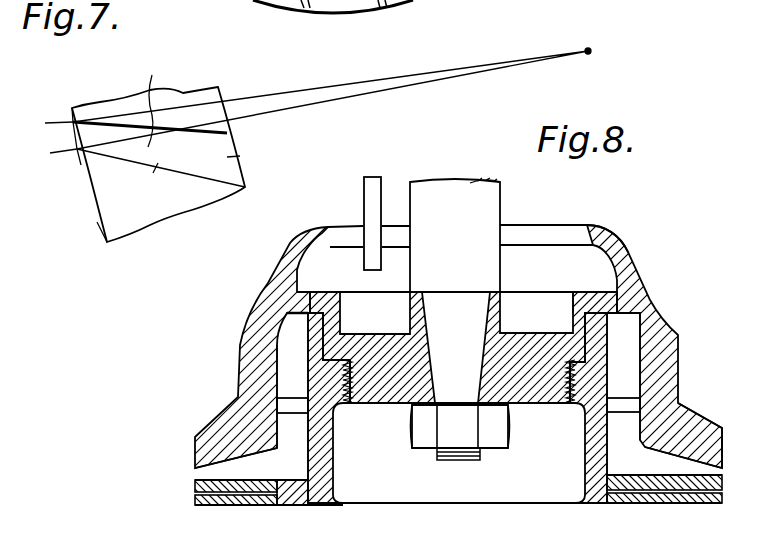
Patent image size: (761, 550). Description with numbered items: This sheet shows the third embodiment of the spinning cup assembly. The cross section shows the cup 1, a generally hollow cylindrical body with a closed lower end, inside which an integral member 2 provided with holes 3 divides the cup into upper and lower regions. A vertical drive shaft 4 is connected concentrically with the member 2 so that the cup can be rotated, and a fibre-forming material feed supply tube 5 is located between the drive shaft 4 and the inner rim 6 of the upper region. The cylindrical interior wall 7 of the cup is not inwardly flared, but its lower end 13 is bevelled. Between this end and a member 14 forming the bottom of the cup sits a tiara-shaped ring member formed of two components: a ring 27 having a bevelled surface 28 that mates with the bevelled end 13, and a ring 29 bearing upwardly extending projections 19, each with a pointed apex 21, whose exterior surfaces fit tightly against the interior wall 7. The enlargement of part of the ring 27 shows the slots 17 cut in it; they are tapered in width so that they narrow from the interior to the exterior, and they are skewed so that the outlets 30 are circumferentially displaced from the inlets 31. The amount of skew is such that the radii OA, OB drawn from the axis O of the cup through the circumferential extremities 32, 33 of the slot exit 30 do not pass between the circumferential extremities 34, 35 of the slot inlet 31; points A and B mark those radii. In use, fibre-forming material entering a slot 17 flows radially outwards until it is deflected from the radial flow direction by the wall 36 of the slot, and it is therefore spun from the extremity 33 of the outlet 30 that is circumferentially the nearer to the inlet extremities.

In FIG. 8, the cup 1 is at (265, 285).
In FIG. 8, the member 2 is at (323, 292).
In FIG. 8, the holes 3 is at (602, 292).
In FIG. 8, the vertical drive shaft 4 is at (500, 215).
In FIG. 8, the fibre-forming material feed supply tube 5 is at (363, 204).
In FIG. 8, the inner rim 6 is at (581, 236).
In FIG. 8, the interior wall 7 is at (281, 345).
In FIG. 8, the bevelled lower end 13 is at (703, 428).
In FIG. 8, the member forming the bottom of the cup 14 is at (323, 498).
In FIG. 7, the slots 17 is at (152, 101).
In FIG. 8, the slots 17 is at (241, 478).
In FIG. 8, the projections 19 is at (302, 461).
In FIG. 8, the pointed apex 21 is at (296, 398).
In FIG. 7, the ring 27 is at (97, 222).
In FIG. 8, the ring 27 is at (197, 498).
In FIG. 7, the bevelled surface 28 is at (107, 183).
In FIG. 8, the ring 29 is at (280, 495).
In FIG. 7, the outlets 30 is at (78, 138).
In FIG. 8, the outlets 30 is at (197, 470).
In FIG. 7, the inlets 31 is at (240, 156).
In FIG. 7, the circumferential extremity 32 is at (72, 118).
In FIG. 7, the circumferential extremity 33 is at (77, 152).
In FIG. 7, the circumferential extremity 34 is at (232, 133).
In FIG. 7, the circumferential extremity 35 is at (245, 185).
In FIG. 7, the wall 36 is at (152, 180).
In FIG. 7, the point on radius OA A is at (50, 155).
In FIG. 7, the point on radius OB B is at (49, 127).
In FIG. 7, the axis of the cup O is at (339, 94).